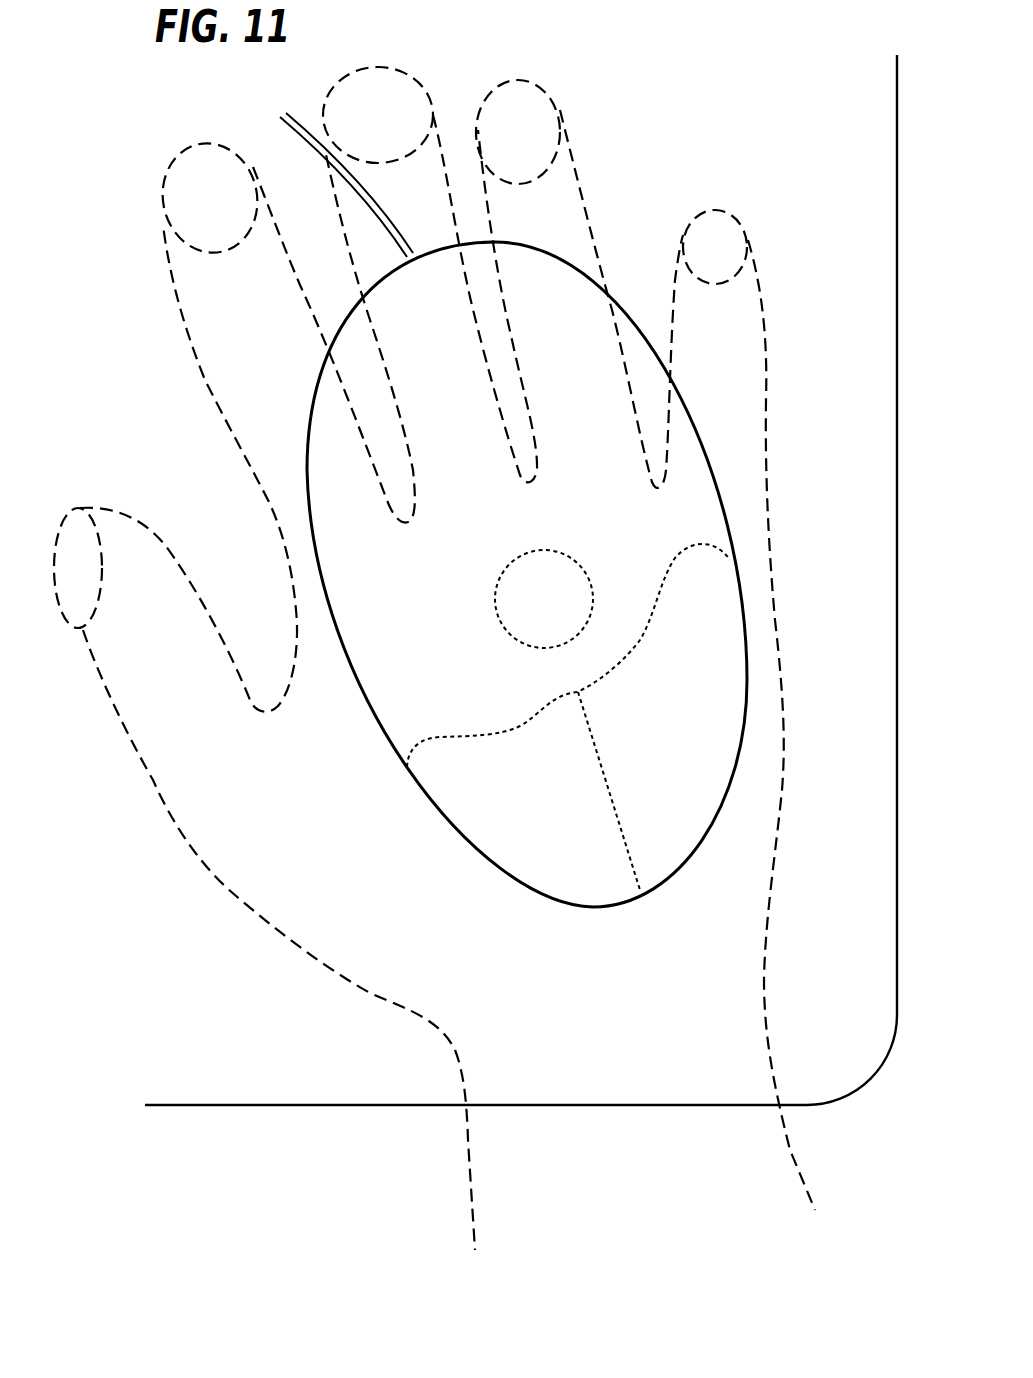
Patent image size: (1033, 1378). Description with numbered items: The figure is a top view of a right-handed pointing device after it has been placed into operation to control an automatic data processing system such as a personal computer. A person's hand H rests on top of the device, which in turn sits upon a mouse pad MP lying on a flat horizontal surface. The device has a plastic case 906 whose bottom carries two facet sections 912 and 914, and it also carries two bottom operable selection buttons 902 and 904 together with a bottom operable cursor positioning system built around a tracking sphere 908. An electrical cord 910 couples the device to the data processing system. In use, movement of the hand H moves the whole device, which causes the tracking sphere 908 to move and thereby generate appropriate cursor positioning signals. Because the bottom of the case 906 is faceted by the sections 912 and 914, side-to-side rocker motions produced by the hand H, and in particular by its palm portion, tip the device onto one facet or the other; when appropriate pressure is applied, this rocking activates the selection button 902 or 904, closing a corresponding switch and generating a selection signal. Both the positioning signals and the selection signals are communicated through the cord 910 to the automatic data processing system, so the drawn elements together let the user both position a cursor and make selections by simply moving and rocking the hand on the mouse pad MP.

The bottom operable selection button 902 is at (510, 577).
The bottom operable selection button 904 is at (497, 843).
The case 906 is at (666, 376).
The tracking sphere 908 is at (593, 598).
The electrical cord 910 is at (290, 131).
The faceted surface 912 is at (628, 340).
The faceted surface 914 is at (323, 520).
The hand H is at (783, 788).
The mouse pad MP is at (705, 1058).